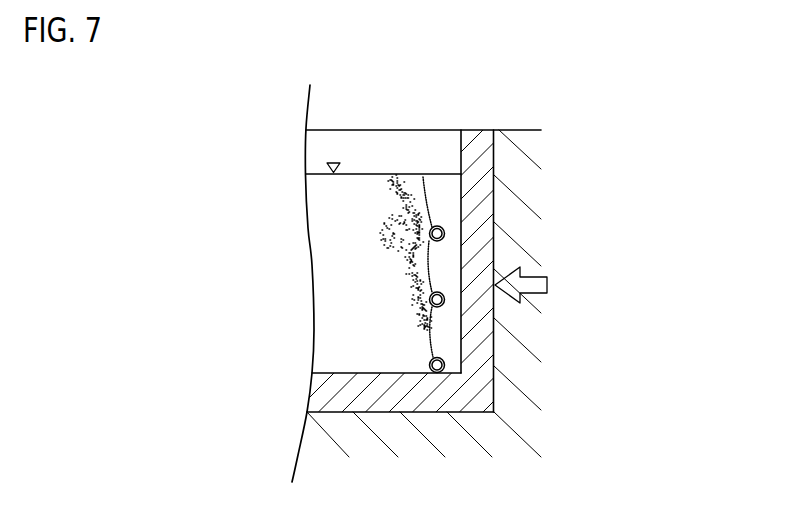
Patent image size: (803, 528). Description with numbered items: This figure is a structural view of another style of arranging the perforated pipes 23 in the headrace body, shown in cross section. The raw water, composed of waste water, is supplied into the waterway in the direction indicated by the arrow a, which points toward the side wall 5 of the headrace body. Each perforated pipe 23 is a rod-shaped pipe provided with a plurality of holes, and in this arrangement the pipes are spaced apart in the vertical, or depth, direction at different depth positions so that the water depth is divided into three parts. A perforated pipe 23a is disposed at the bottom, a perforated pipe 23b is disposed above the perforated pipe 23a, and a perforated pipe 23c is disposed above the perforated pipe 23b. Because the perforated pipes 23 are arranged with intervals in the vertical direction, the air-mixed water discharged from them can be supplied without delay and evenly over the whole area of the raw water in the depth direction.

The side wall 5 is at (330, 213).
The perforated pipe 23 is at (498, 342).
The perforated pipe 23a is at (445, 367).
The perforated pipe 23b is at (444, 303).
The perforated pipe 23c is at (445, 233).
The arrow a is at (548, 282).